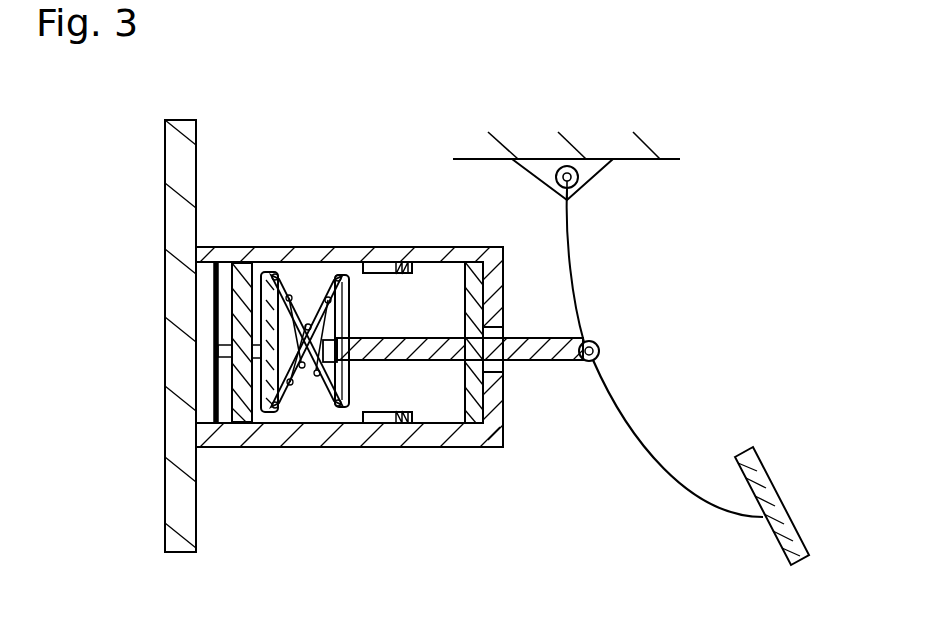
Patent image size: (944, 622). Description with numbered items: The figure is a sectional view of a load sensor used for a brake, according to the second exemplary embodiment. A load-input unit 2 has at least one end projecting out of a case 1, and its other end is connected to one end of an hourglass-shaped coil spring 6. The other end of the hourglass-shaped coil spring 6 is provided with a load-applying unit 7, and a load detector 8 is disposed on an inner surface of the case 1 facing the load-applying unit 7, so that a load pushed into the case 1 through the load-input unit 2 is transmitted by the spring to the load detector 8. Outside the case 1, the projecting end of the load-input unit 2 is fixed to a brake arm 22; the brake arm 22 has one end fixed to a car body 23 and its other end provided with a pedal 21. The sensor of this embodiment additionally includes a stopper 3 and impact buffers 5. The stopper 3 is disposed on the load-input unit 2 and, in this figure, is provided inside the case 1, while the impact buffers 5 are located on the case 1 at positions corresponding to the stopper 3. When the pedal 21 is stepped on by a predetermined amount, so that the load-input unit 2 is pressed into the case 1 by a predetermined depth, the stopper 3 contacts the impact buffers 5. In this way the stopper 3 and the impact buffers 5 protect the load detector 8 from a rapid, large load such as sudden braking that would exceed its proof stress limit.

The case 1 is at (500, 445).
The load-input unit 2 is at (560, 358).
The stopper 3 is at (477, 422).
The impact buffers 5 is at (405, 267).
The hourglass-shaped coil spring 6 is at (313, 421).
The load-applying unit 7 is at (248, 421).
The load detector 8 is at (240, 267).
The pedal 21 is at (787, 512).
The brake arm 22 is at (638, 438).
The car body 23 is at (162, 268).